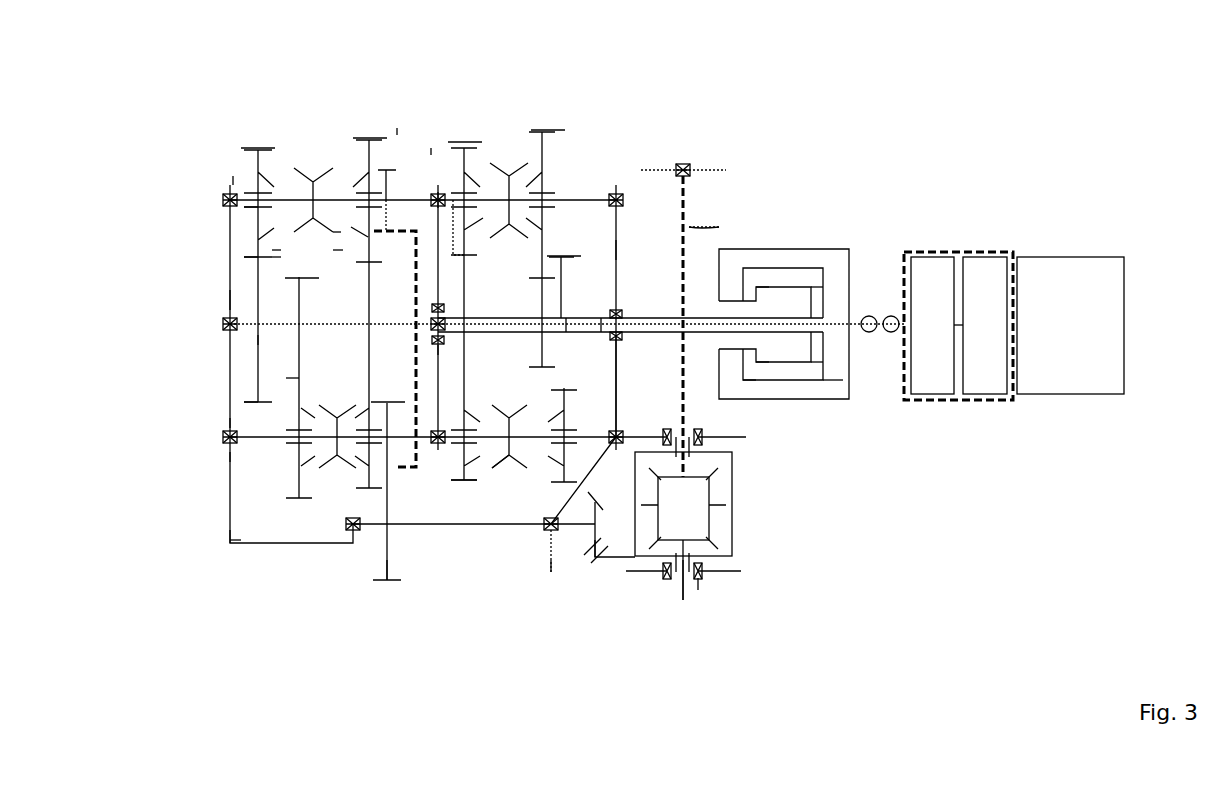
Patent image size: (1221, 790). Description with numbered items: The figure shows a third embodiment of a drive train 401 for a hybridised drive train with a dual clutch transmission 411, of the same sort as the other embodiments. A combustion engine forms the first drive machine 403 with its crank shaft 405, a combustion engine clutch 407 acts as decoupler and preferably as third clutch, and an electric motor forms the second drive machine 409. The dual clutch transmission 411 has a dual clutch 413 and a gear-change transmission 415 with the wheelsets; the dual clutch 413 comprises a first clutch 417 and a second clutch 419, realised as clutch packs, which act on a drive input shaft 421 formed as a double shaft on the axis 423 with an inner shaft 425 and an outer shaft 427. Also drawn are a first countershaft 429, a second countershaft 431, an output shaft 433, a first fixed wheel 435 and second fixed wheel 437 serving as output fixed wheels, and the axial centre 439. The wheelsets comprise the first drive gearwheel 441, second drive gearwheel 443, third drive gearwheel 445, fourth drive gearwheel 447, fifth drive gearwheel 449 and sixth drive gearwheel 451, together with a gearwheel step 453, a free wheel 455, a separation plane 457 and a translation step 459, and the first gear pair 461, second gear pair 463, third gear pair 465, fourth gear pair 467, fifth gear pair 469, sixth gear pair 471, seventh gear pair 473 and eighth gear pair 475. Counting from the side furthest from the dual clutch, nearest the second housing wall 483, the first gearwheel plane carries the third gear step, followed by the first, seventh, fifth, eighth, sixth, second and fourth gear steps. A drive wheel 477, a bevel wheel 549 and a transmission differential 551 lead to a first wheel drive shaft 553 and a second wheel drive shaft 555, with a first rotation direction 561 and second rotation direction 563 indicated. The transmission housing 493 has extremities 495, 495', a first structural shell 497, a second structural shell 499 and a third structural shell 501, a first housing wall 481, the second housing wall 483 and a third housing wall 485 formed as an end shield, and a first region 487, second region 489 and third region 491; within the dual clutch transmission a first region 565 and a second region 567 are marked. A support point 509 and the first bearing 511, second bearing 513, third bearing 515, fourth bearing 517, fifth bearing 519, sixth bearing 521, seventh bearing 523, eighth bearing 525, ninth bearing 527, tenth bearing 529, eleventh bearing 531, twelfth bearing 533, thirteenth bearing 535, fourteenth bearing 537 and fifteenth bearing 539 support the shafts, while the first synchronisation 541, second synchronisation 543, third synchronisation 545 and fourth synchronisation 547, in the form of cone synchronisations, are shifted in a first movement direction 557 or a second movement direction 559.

The drive train 401 is at (709, 132).
The drive machine 403 is at (1085, 332).
The crank shaft 405 is at (1012, 335).
The combustion engine clutch 407 is at (1001, 332).
The drive machine 409 is at (948, 332).
The dual clutch transmission 411 is at (530, 102).
The dual clutch 413 is at (793, 232).
The gear-change transmission 415 is at (398, 128).
The first clutch 417 is at (812, 360).
The second clutch 419 is at (760, 375).
The drive input shaft 421 is at (822, 384).
The axis 423 is at (205, 300).
The inner shaft 425 is at (290, 378).
The outer shaft 427 is at (618, 190).
The first countershaft 429 is at (452, 200).
The second countershaft 431 is at (298, 530).
The output shaft 433 is at (466, 486).
The first fixed wheel 435 is at (396, 165).
The second fixed wheel 437 is at (384, 585).
The axial centre 439 is at (430, 148).
The first drive gearwheel 441 is at (320, 470).
The second drive gearwheel 443 is at (312, 165).
The third drive gearwheel 445 is at (338, 228).
The fourth drive gearwheel 447 is at (488, 165).
The fifth drive gearwheel 449 is at (532, 130).
The sixth drive gearwheel 451 is at (602, 316).
The gearwheel step 453 is at (250, 262).
The free wheel 455 is at (248, 165).
The separation plane 457 is at (440, 452).
The translation step 459 is at (594, 560).
The first gear pair 461 is at (278, 255).
The second gear pair 463 is at (245, 402).
The third gear pair 465 is at (226, 420).
The fourth gear pair 467 is at (392, 252).
The fifth gear pair 469 is at (470, 470).
The sixth gear pair 471 is at (442, 190).
The seventh gear pair 473 is at (566, 316).
The eighth gear pair 475 is at (745, 383).
The drive wheel 477 is at (255, 340).
The first housing wall 481 is at (805, 364).
The second housing wall 483 is at (229, 545).
The third housing wall 485 is at (436, 450).
The first region 487 is at (562, 572).
The second region 489 is at (232, 176).
The third region 491 is at (433, 192).
The transmission housing 493 is at (615, 560).
The extremity of a transmission housing 495 is at (383, 364).
The extremity of a transmission housing 495' is at (653, 613).
The first structural shell 497 is at (758, 365).
The second structural shell 499 is at (222, 434).
The third structural shell 501 is at (440, 450).
The support point 509 is at (222, 325).
The first bearing 511 is at (222, 196).
The second bearing 513 is at (390, 203).
The third bearing 515 is at (617, 250).
The fourth bearing 517 is at (222, 318).
The fifth bearing 519 is at (445, 334).
The sixth bearing 521 is at (440, 346).
The seventh bearing 523 is at (622, 340).
The eighth bearing 525 is at (226, 455).
The ninth bearing 527 is at (388, 575).
The tenth bearing 529 is at (610, 552).
The eleventh bearing 531 is at (352, 540).
The twelfth bearing 533 is at (551, 535).
The thirteenth bearing 535 is at (698, 585).
The fourteenth bearing 537 is at (733, 520).
The fifteenth bearing 539 is at (684, 162).
The first synchronisation 541 is at (262, 205).
The second synchronisation 543 is at (503, 215).
The third synchronisation 545 is at (352, 545).
The fourth synchronisation 547 is at (506, 472).
The bevel wheel 549 is at (594, 505).
The transmission differential 551 is at (745, 571).
The first wheel drive shaft 553 is at (684, 600).
The second wheel drive shaft 555 is at (740, 227).
The first movement direction 557 is at (285, 250).
The second movement direction 559 is at (336, 252).
The first rotation direction 561 is at (866, 316).
The second rotation direction 563 is at (892, 316).
The first region 565 is at (348, 354).
The second region 567 is at (530, 354).